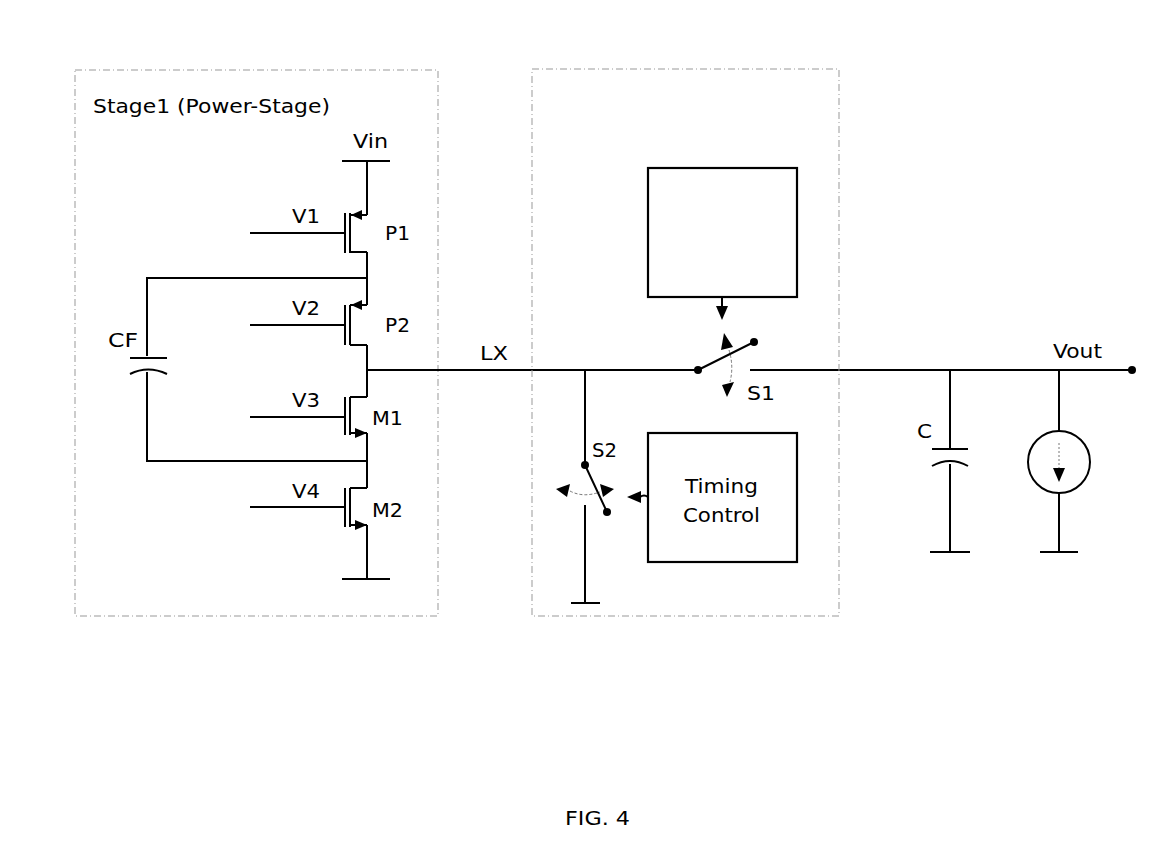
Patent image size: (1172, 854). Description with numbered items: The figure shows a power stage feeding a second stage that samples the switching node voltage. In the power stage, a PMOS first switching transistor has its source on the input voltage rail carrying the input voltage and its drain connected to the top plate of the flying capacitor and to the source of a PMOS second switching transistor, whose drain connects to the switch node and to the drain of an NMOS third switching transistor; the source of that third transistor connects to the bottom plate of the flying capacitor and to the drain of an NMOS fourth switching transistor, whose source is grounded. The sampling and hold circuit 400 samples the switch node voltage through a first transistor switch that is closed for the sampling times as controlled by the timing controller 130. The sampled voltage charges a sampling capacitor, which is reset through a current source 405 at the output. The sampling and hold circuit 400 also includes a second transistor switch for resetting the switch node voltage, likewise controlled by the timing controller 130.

The sampling and hold circuit 400 is at (767, 68).
The timing controller 130 is at (755, 168).
The current source 405 is at (1092, 467).